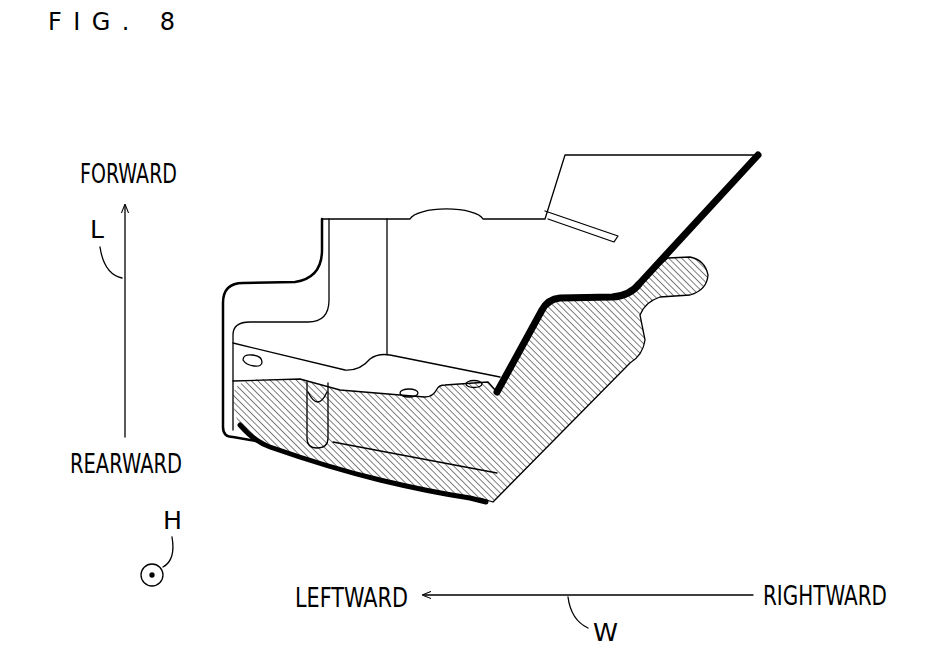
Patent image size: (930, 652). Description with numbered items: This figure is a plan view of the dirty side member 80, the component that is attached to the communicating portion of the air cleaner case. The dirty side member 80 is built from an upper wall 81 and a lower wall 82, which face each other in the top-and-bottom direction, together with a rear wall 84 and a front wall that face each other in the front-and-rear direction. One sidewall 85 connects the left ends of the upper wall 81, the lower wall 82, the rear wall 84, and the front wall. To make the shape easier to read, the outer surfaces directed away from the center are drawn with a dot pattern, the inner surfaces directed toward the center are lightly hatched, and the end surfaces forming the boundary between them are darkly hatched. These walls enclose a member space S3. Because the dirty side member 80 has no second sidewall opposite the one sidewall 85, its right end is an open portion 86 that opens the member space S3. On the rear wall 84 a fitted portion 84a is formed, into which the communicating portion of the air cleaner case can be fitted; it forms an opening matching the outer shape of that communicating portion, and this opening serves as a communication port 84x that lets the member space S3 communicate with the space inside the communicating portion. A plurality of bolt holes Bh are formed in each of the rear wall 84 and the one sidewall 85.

The dirty side member 80 is at (331, 147).
The upper wall 81 is at (436, 237).
The lower wall 82 is at (540, 442).
The rear wall 84 is at (241, 437).
The fitted portion 84a is at (300, 385).
The communication port 84x is at (336, 452).
The one sidewall 85 is at (222, 380).
The open portion 86 is at (563, 399).
The bolt holes Bh is at (223, 360).
The member space S3 is at (494, 442).